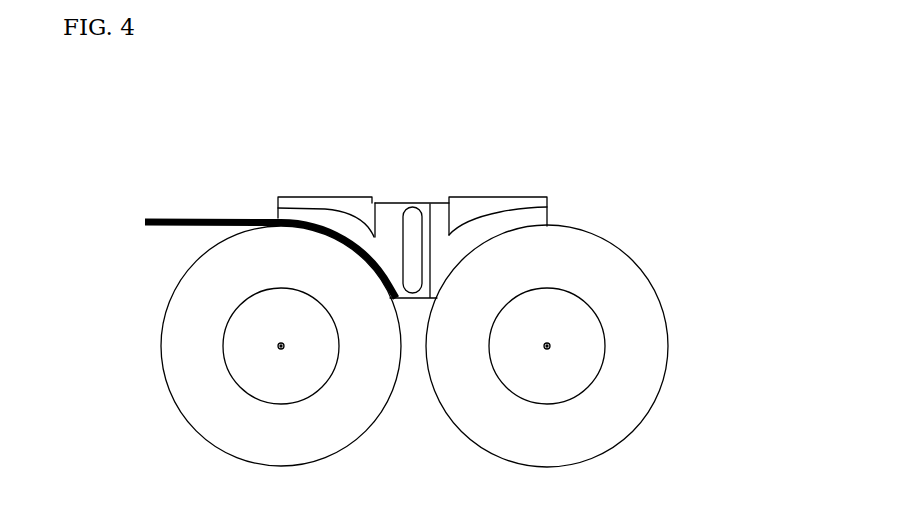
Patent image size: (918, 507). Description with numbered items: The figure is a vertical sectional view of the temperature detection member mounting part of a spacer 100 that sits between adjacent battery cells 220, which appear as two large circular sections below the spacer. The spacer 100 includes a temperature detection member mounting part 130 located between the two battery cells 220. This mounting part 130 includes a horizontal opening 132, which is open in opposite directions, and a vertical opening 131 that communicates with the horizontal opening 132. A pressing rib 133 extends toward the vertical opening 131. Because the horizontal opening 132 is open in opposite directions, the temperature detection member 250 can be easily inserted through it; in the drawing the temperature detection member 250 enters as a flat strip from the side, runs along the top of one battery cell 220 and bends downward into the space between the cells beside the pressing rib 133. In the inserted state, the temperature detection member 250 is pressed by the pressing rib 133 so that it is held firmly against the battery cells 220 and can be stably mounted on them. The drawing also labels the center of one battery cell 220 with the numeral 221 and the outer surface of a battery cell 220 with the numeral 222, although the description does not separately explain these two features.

The spacer 100 is at (287, 178).
The temperature detection member mounting part 130 is at (448, 176).
The vertical opening 131 is at (382, 193).
The horizontal opening 132 is at (270, 210).
The pressing rib 133 is at (415, 205).
The battery cells 220 is at (173, 290).
The rotation shaft 221 is at (549, 346).
The roller surface 222 is at (549, 228).
The temperature detection member 250 is at (148, 217).